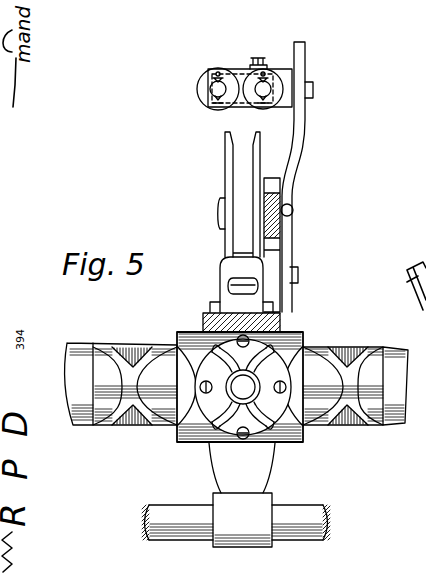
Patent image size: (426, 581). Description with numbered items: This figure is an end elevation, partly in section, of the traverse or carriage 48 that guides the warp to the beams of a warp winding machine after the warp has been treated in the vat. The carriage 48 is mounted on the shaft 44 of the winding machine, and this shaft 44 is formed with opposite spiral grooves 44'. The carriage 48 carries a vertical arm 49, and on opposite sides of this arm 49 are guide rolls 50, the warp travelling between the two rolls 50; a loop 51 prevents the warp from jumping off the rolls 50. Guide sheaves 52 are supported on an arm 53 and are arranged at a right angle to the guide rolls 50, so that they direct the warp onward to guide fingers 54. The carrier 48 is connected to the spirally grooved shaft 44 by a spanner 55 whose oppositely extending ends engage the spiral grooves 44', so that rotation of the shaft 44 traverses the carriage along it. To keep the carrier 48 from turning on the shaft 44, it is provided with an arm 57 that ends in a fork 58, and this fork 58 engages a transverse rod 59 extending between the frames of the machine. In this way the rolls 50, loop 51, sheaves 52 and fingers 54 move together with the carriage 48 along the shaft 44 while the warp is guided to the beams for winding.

The shaft 44 is at (221, 369).
The spiral grooves 44' is at (244, 406).
The traverse or carriage 48 is at (186, 445).
The vertical arm 49 is at (298, 142).
The guide rolls 50 is at (224, 69).
The loop 51 is at (241, 69).
The guide sheaves 52 is at (232, 180).
The arm 53 is at (282, 204).
The guide fingers 54 is at (228, 285).
The spanner 55 is at (270, 343).
The arm 57 is at (253, 468).
The fork 58 is at (245, 523).
The transverse rod 59 is at (310, 529).